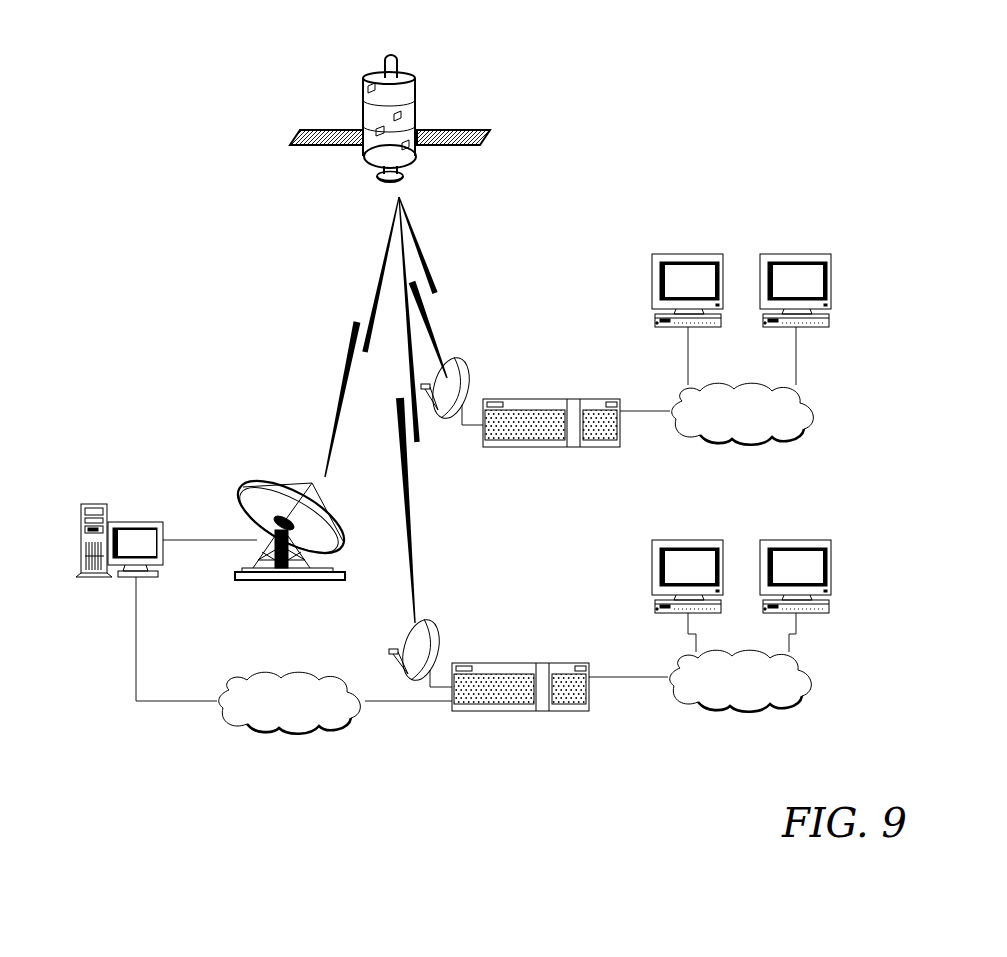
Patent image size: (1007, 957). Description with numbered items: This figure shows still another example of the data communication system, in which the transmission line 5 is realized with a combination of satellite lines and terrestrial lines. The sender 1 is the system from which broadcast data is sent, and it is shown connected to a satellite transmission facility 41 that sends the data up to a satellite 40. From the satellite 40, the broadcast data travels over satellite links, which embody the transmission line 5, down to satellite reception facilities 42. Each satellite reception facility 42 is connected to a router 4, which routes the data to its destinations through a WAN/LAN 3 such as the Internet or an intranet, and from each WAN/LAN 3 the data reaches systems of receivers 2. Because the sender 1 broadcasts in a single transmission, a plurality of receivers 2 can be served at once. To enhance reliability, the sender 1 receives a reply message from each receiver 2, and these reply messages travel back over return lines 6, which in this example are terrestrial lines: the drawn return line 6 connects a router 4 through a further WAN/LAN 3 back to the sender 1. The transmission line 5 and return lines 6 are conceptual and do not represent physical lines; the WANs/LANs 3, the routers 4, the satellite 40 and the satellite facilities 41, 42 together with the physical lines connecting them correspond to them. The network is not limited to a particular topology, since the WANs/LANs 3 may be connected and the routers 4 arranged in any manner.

The sender 1 is at (137, 520).
The receiver 2 is at (688, 252).
The WAN/LAN 3 is at (744, 444).
The router 4 is at (593, 398).
The transmission line 5 is at (418, 244).
The return line 6 is at (178, 702).
The satellite 40 is at (392, 52).
The satellite transmission facility 41 is at (251, 484).
The satellite reception facility 42 is at (456, 360).